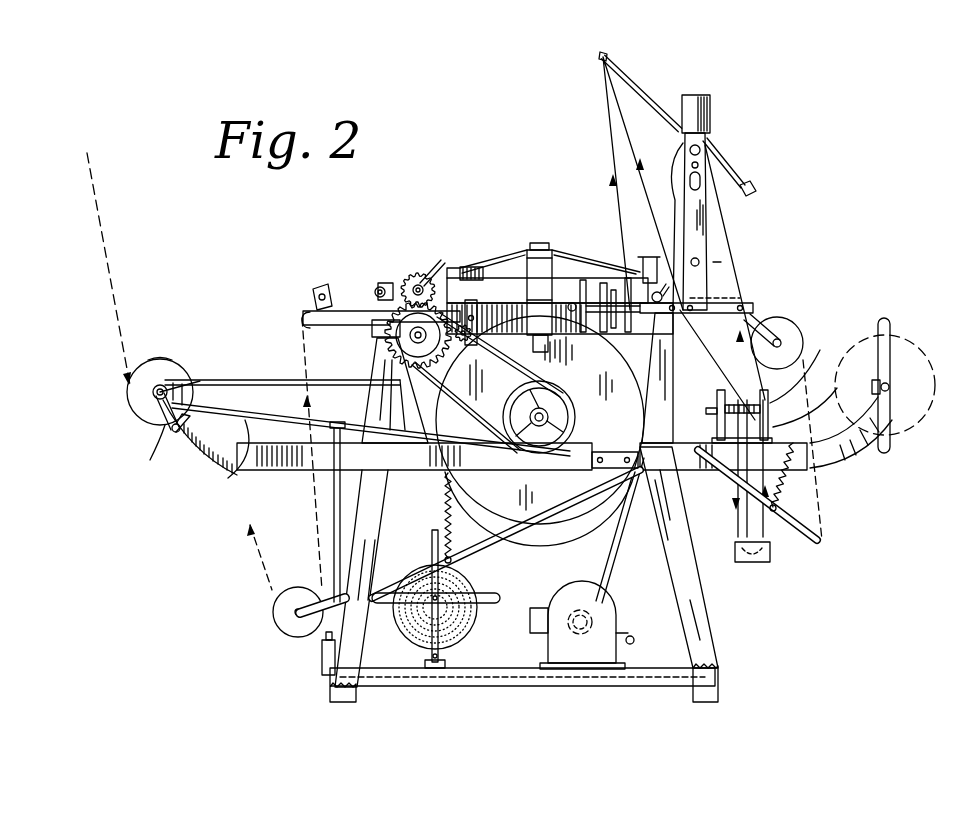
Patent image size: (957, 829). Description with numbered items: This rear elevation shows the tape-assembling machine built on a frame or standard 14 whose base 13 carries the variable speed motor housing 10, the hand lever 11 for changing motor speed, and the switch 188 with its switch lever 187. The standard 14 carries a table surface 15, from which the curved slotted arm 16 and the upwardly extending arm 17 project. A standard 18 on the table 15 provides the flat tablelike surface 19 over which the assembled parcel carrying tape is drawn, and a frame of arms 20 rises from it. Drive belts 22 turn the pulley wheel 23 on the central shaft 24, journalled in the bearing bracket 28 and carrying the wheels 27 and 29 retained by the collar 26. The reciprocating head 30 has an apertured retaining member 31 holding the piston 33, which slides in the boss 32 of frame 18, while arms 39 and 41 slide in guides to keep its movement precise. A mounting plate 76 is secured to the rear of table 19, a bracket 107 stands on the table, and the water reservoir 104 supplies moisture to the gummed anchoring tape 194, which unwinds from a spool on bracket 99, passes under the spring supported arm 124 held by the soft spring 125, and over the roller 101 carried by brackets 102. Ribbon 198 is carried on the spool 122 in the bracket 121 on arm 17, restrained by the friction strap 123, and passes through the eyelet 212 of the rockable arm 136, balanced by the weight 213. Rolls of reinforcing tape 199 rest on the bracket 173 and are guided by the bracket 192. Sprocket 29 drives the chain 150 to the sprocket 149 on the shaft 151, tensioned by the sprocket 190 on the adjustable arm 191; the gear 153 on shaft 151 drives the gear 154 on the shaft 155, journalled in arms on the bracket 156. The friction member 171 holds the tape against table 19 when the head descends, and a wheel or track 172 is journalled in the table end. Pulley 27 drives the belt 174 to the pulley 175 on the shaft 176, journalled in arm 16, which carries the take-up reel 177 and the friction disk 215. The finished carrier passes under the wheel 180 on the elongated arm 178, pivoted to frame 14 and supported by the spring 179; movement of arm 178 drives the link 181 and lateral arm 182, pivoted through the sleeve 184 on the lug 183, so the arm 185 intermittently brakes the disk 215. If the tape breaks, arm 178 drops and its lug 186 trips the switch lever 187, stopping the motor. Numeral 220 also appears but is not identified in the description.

The motor housing 10 is at (598, 670).
The hand lever 11 is at (630, 625).
The base 13 is at (520, 686).
The frame or standard 14 is at (695, 592).
The table surface 15 is at (370, 462).
The upwardly curved slotted arm 16 is at (205, 472).
The upwardly extending arm 17 is at (860, 452).
The standard 18 is at (658, 385).
The tablelike surface 19 is at (340, 310).
The pair of arms 20 is at (703, 220).
The drive belts 22 is at (616, 556).
The pulley wheel 23 is at (620, 470).
The central rotating shaft 24 is at (556, 405).
The collar 26 is at (518, 396).
The wheel or pulley 27 is at (550, 362).
The bearing bracket 28 is at (568, 446).
The sprocket 29 is at (560, 365).
The reciprocating head 30 is at (515, 255).
The apertured retaining member 31 is at (553, 265).
The boss 32 is at (540, 336).
The rod, piston or arm 33 is at (530, 291).
The arm or piston 39 is at (483, 267).
The arm or piston 41 is at (613, 293).
The mounting bracket or plate 76 is at (571, 303).
The upwardly extending bracket or arm 99 is at (905, 350).
The reel, spool or wheel 101 is at (800, 335).
The arms or brackets 102 is at (757, 318).
The water reservoir 104 is at (712, 112).
The upwardly extending bracket 107 is at (675, 240).
The bracket 121 is at (837, 392).
The spool or reel 122 is at (826, 347).
The friction strap 123 is at (752, 520).
The spring supported right angle arm 124 is at (822, 542).
The soft spring 125 is at (827, 488).
The extensible and rockable arm 136 is at (630, 85).
The sprocket 149 is at (398, 348).
The sprocket chain 150 is at (482, 408).
The pin or shaft 151 is at (415, 338).
The gear 153 is at (390, 328).
The cooperating gear 154 is at (418, 277).
The shaft 155 is at (427, 280).
The bracket 156 is at (378, 290).
The friction wheel or member 171 is at (313, 297).
The wheel or track 172 is at (300, 322).
The bracket 173 is at (498, 605).
The drive belt 174 is at (240, 378).
The pulley 175 is at (160, 420).
The shaft 176 is at (153, 392).
The spool or reel 177 is at (152, 358).
The elongated arm 178 is at (566, 515).
The spring 179 is at (446, 505).
The wheel 180 is at (285, 618).
The connecting rod or link 181 is at (335, 530).
The laterally extending arm 182 is at (228, 478).
The lug 183 is at (152, 462).
The sleeve 184 is at (172, 432).
The arm 185 is at (198, 378).
The lug or extension 186 is at (322, 645).
The switch lever 187 is at (350, 647).
The switch 188 is at (330, 704).
The adjustably mounted sprocket 190 is at (462, 338).
The adjustably mounted arm 191 is at (467, 303).
The bracket 192 is at (608, 477).
The anchoring tape 194 is at (893, 437).
The ribbon or cord 198 is at (608, 130).
The rolls of reinforcing tape 199 is at (462, 586).
The eyelet or aperture 212 is at (598, 56).
The weight 213 is at (754, 187).
The friction disk or wheel 215 is at (122, 362).
The marking 220 is at (770, 560).